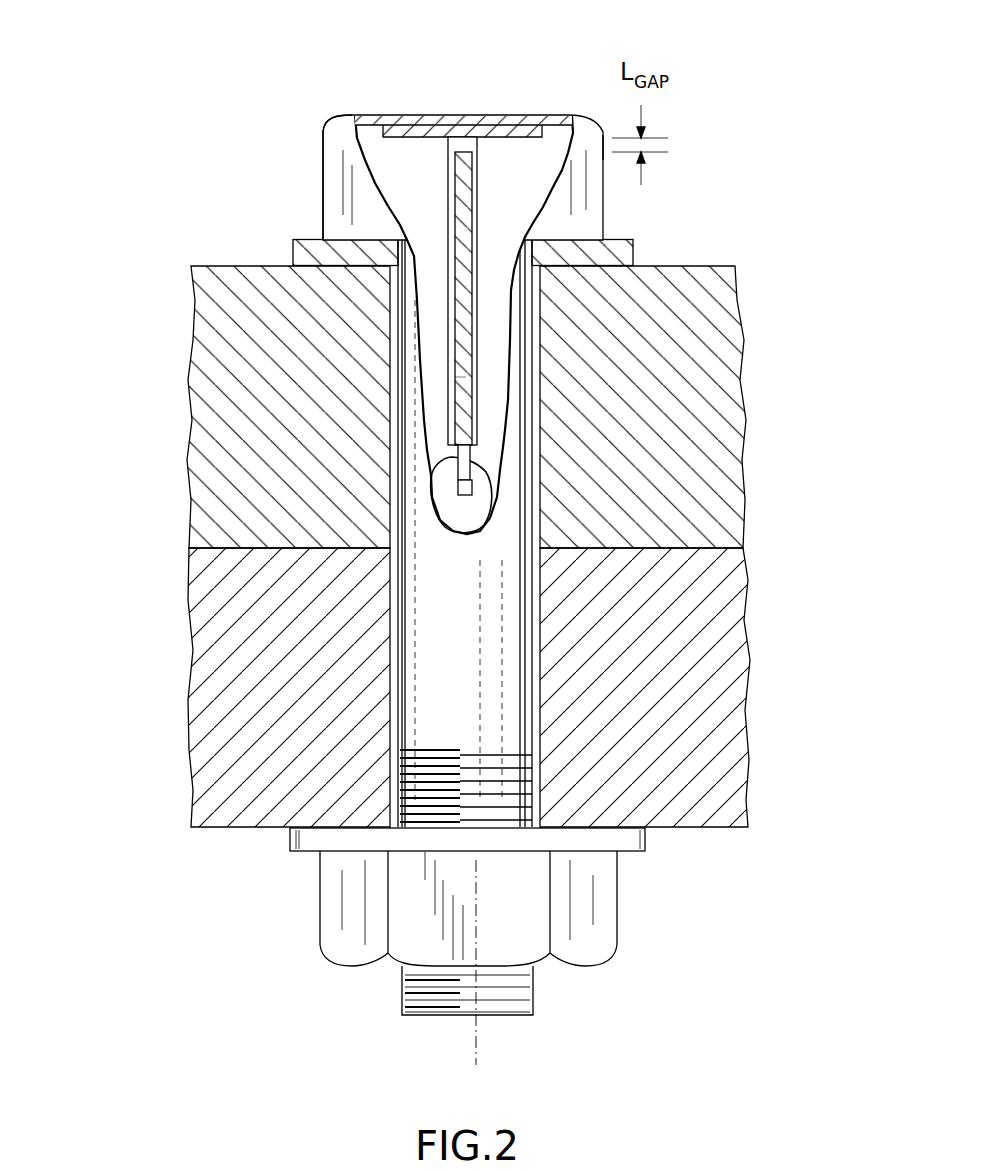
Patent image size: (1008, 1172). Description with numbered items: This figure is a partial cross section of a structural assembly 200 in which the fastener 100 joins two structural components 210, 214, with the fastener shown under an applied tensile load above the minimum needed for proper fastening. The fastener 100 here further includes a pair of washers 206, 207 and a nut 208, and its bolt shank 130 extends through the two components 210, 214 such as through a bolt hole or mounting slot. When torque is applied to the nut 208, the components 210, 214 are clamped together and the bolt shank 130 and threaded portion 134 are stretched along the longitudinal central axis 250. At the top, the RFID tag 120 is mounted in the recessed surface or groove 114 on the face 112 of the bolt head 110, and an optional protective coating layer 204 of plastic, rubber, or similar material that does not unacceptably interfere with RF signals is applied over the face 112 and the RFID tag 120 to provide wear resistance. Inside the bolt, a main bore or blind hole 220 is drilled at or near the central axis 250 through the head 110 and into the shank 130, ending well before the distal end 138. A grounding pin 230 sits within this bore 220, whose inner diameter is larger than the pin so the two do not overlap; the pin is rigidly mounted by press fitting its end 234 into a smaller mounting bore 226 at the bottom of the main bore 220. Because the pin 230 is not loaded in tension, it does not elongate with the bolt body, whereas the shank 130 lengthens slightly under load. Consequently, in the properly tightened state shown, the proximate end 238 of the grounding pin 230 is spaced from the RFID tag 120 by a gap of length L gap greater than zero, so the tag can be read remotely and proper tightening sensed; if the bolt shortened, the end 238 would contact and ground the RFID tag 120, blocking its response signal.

The fastener 100 is at (298, 208).
The bolt head 110 is at (603, 210).
The face 112 is at (323, 128).
The recessed surface or groove 114 is at (520, 130).
The RFID tag 120 is at (410, 126).
The bolt shank 130 is at (468, 664).
The threaded portion 134 is at (460, 752).
The distal end 138 is at (533, 1010).
The structural assembly 200 is at (136, 151).
The protective coating layer 204 is at (335, 117).
The washer 206 is at (295, 253).
The washer 207 is at (290, 845).
The nut 208 is at (352, 895).
The structural component 210 is at (742, 403).
The structural component 214 is at (747, 643).
The main bore or blind hole 220 is at (433, 507).
The mounting bore or blind hole 226 is at (460, 529).
The grounding pin 230 is at (455, 377).
The end of pin 234 is at (490, 522).
The proximate end 238 is at (463, 150).
The longitudinal/central axis 250 is at (480, 1030).